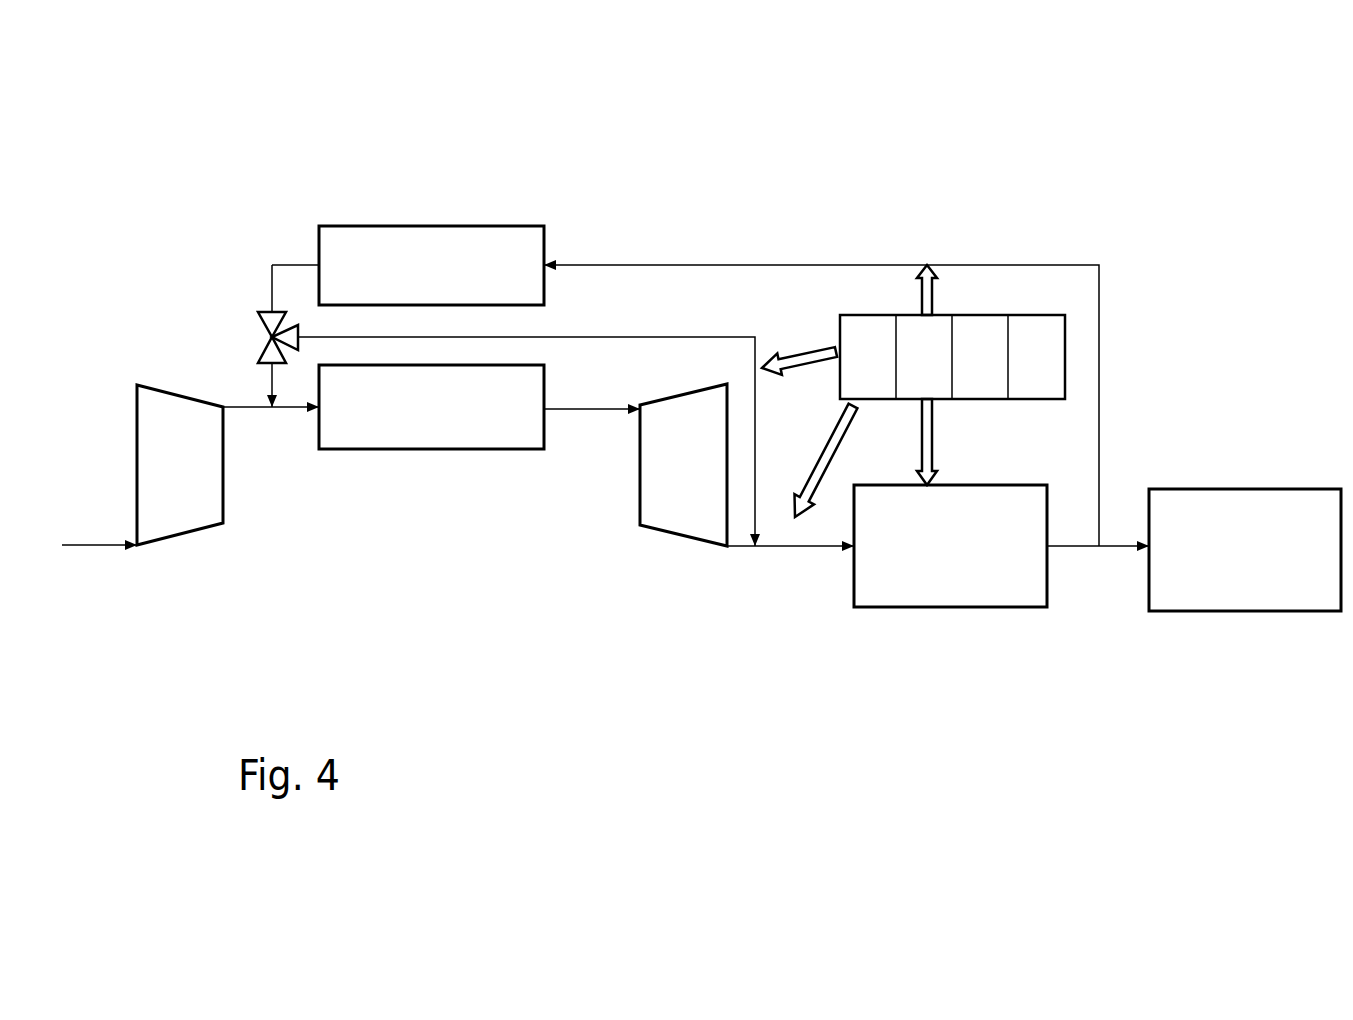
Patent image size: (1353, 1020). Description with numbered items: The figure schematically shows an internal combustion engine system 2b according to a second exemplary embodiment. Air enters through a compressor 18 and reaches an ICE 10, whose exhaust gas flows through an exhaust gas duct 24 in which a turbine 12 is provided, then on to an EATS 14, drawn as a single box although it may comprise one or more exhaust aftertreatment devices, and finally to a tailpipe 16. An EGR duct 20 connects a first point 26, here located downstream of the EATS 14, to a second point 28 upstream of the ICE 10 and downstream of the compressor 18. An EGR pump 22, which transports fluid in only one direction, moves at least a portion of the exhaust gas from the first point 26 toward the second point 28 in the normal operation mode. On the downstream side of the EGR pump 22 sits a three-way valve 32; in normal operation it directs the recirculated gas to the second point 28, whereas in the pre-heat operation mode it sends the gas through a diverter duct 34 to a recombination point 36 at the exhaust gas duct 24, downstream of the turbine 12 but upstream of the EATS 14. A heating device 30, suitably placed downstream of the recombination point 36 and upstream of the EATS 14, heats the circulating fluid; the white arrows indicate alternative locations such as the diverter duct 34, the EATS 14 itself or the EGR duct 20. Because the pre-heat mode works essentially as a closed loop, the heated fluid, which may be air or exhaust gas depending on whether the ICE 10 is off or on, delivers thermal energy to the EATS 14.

The internal combustion engine system 2b is at (208, 141).
The ICE 10 is at (432, 432).
The turbine 12 is at (668, 520).
The EATS 14 is at (966, 578).
The tailpipe 16 is at (1232, 604).
The compressor 18 is at (173, 510).
The EGR duct 20 is at (740, 264).
The EGR pump 22 is at (412, 245).
The exhaust gas duct 24 is at (578, 410).
The first point 26 is at (1097, 548).
The second point 28 is at (271, 410).
The heating device 30 is at (975, 315).
The three-way valve 32 is at (272, 337).
The diverter duct 34 is at (635, 336).
The recombination point 36 is at (753, 548).